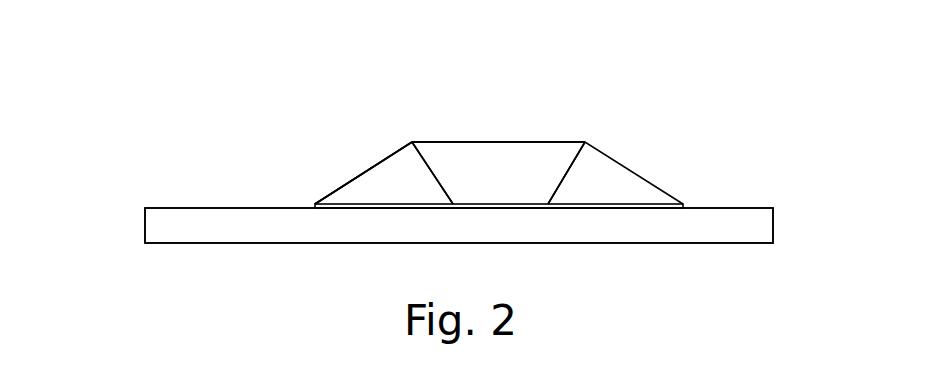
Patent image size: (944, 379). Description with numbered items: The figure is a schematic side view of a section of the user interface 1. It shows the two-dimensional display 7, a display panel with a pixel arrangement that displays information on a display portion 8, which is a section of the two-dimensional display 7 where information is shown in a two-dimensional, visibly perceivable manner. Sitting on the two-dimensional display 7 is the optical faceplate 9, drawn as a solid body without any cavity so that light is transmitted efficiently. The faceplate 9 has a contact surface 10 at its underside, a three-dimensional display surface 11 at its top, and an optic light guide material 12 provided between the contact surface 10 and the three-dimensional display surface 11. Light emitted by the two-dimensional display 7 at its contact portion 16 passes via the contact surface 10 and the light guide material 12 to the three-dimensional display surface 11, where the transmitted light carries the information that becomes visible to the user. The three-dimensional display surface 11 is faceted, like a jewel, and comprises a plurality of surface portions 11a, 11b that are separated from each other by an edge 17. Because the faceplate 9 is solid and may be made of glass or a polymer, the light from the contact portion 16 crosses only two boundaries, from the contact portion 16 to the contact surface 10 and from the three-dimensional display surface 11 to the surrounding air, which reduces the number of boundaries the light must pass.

The user interface 1 is at (314, 100).
The two-dimensional display 7 is at (773, 222).
The display portion 8 is at (160, 224).
The optical faceplate 9 is at (658, 141).
The contact surface 10 is at (640, 213).
The three-dimensional display surface 11 is at (539, 125).
The surface portion 11a is at (390, 165).
The surface portion 11b is at (493, 140).
The optic light guide material 12 is at (475, 170).
The contact portion 16 is at (347, 190).
The edge 17 is at (425, 150).